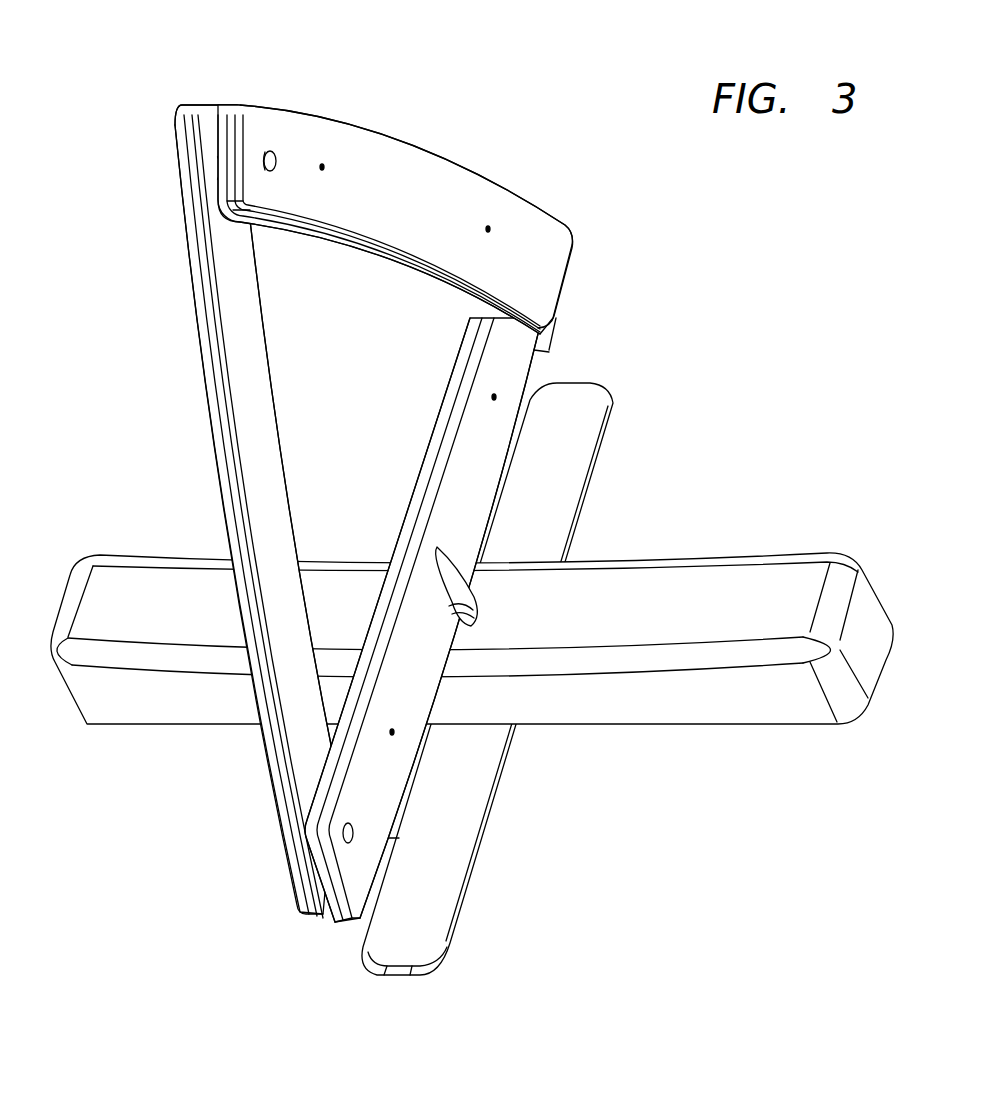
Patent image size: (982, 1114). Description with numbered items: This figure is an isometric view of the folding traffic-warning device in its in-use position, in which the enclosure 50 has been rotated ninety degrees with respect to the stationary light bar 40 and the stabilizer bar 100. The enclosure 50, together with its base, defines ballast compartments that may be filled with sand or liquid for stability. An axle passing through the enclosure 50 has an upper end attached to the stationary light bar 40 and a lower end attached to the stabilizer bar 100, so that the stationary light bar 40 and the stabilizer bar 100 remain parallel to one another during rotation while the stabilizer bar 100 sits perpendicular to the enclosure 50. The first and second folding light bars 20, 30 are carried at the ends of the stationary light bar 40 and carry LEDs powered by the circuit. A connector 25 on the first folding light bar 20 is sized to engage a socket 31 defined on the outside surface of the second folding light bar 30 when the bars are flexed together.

The first folding light bar 20 is at (466, 148).
The connector 25 is at (283, 157).
The second folding light bar 30 is at (196, 445).
The socket 31 is at (216, 165).
The stationary light bar 40 is at (507, 363).
The enclosure 50 is at (705, 543).
The stabilizer bar 100 is at (490, 822).